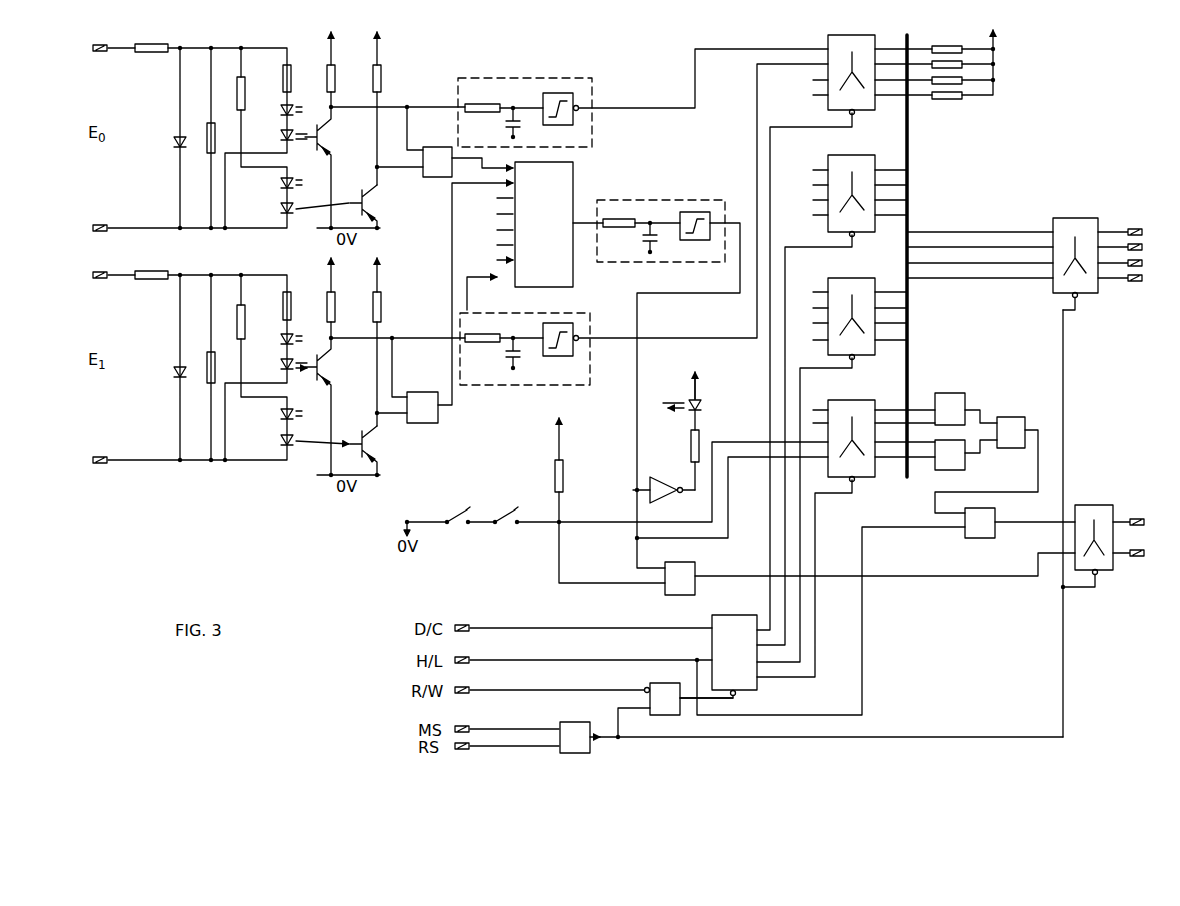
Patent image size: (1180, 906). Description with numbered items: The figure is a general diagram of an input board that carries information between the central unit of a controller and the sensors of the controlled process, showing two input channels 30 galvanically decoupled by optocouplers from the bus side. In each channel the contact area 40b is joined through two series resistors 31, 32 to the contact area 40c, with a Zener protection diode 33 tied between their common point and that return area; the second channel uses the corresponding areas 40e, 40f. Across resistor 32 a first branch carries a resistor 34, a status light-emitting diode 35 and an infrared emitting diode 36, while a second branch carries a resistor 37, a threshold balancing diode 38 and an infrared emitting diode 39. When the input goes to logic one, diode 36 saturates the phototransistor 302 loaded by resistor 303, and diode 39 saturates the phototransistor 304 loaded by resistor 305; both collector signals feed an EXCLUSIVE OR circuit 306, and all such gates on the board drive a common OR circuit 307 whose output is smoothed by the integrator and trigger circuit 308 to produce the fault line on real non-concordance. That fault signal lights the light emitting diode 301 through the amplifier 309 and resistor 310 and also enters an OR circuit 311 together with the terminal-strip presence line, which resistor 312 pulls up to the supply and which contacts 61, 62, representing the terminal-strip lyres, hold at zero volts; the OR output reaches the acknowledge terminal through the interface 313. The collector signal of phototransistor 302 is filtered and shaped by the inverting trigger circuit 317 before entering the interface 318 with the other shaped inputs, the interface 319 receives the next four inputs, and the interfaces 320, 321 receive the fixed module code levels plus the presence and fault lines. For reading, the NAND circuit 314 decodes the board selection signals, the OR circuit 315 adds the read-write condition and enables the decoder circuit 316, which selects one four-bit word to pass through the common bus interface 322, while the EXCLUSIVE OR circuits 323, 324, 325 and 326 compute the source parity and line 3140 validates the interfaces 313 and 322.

The input channel 30 is at (216, 42).
The resistor 31 is at (148, 46).
The resistor 32 is at (206, 128).
The Zener protection diode 33 is at (167, 254).
The resistor 34 is at (297, 192).
The light-emitting diode 35 is at (279, 110).
The infrared emitting diode 36 is at (279, 136).
The resistor 37 is at (237, 94).
The threshold balancing diode 38 is at (279, 184).
The infrared emitting diode 39 is at (279, 208).
The contact area 40b is at (99, 37).
The contact area 40c is at (98, 218).
The contact area 40e is at (99, 264).
The contact area 40f is at (97, 450).
The contact 61 is at (457, 529).
The contact 62 is at (506, 529).
The light emitting diode 301 is at (699, 402).
The phototransistor 302 is at (333, 167).
The resistor 303 is at (347, 55).
The phototransistor 304 is at (378, 206).
The resistor 305 is at (392, 55).
The EXCLUSIVE OR circuit 306 is at (407, 436).
The OR circuit 307 is at (574, 172).
The filter circuit 308 is at (650, 200).
The amplifier 309 is at (676, 480).
The resistor 310 is at (691, 446).
The OR circuit 311 is at (664, 564).
The resistor 312 is at (555, 480).
The interface 313 is at (1108, 505).
The NAND circuit 314 is at (557, 723).
The OR circuit 315 is at (648, 684).
The decoder circuit 316 is at (718, 616).
The filter and inverting trigger circuit 317 is at (526, 78).
The interface 318 is at (839, 35).
The interface circuit 319 is at (839, 155).
The interface 320 is at (839, 278).
The interface circuit 321 is at (839, 400).
The bus interface circuit 322 is at (1064, 218).
The EXCLUSIVE OR circuit 323 is at (941, 393).
The EXCLUSIVE OR circuit 324 is at (960, 474).
The EXCLUSIVE OR circuit 325 is at (999, 417).
The EXCLUSIVE OR circuit 326 is at (994, 508).
The line 3140 is at (808, 742).